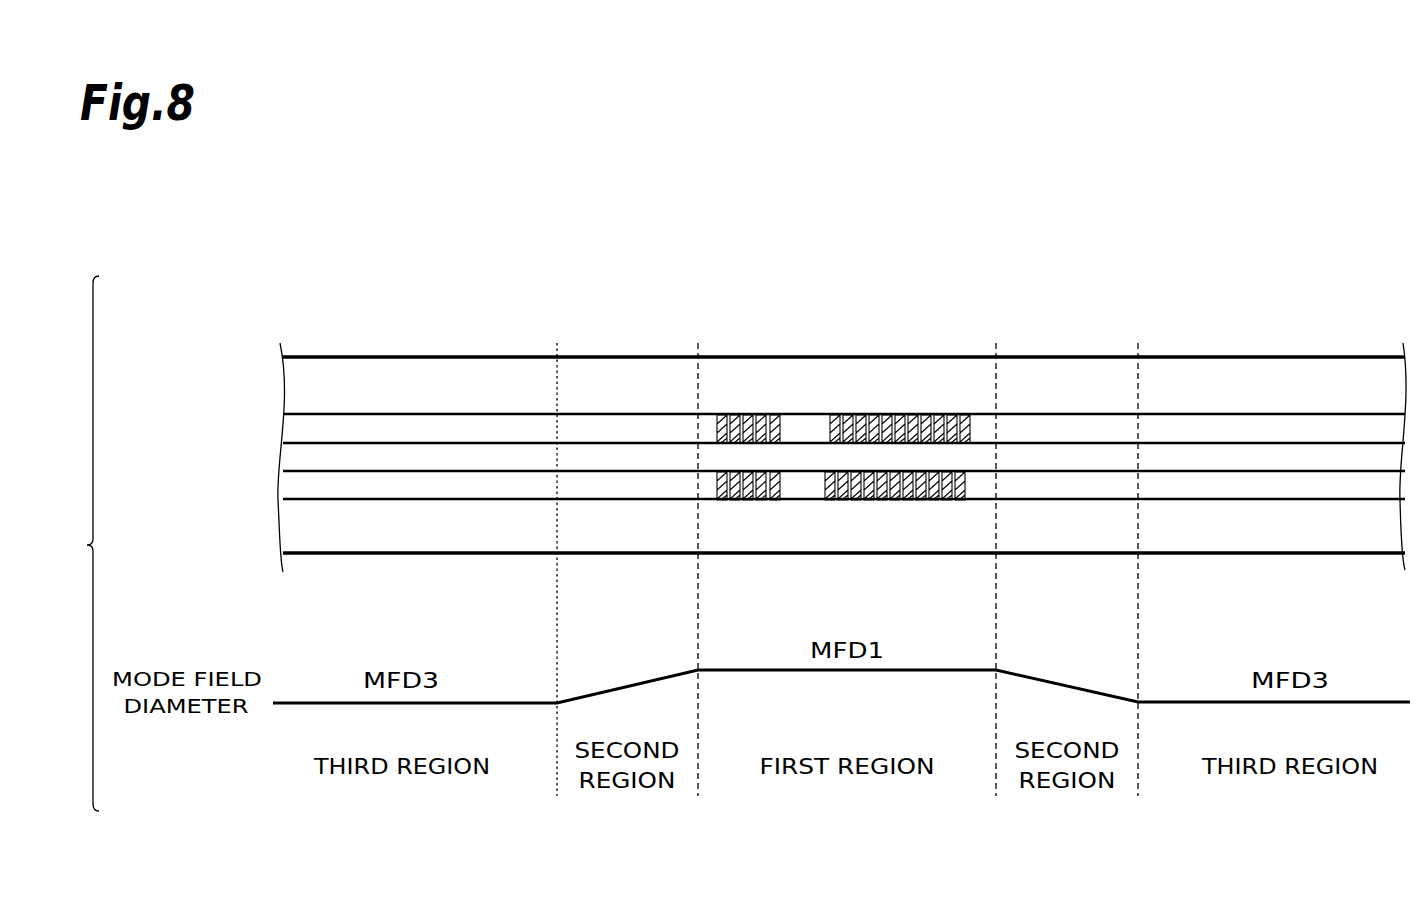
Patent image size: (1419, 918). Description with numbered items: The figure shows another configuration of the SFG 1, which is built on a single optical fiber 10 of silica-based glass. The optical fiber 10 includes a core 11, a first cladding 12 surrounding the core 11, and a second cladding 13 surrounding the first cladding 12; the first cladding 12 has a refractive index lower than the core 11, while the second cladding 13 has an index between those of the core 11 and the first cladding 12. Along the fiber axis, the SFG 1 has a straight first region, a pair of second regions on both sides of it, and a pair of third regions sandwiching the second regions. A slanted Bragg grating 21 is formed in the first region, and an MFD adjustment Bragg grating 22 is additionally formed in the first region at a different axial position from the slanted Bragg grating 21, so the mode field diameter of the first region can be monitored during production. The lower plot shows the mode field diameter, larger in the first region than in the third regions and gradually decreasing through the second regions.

The SFG 1 is at (876, 259).
The optical fiber 10 is at (844, 408).
The core 11 is at (323, 304).
The first cladding 12 is at (443, 487).
The second cladding 13 is at (368, 530).
The slanted Bragg grating 21 is at (937, 413).
The MFD adjustment Bragg grating 22 is at (750, 413).